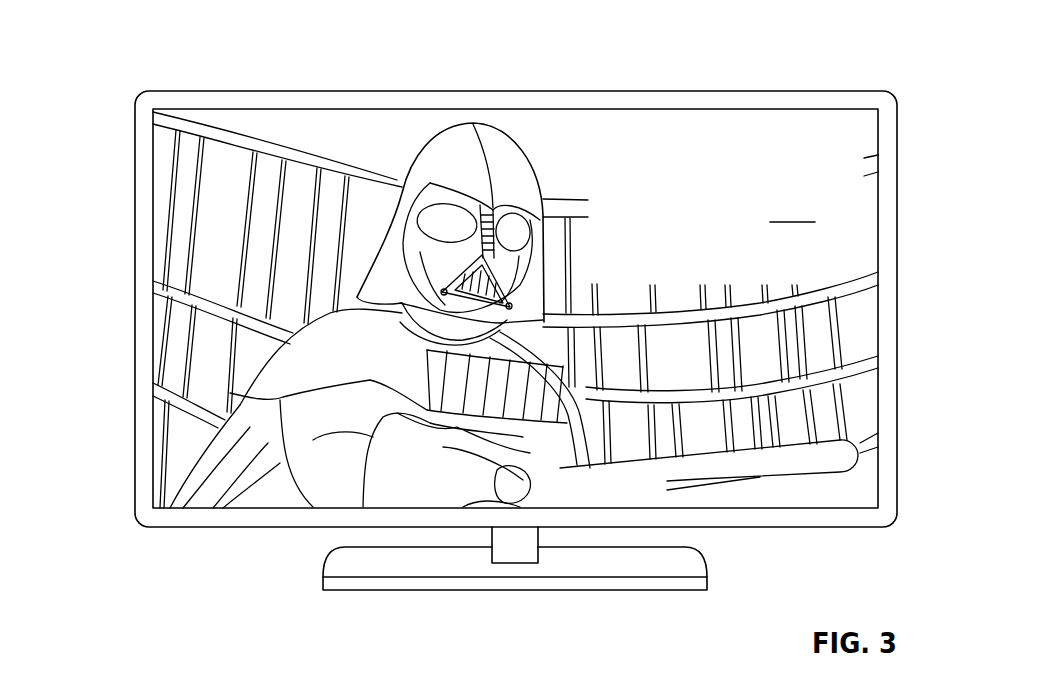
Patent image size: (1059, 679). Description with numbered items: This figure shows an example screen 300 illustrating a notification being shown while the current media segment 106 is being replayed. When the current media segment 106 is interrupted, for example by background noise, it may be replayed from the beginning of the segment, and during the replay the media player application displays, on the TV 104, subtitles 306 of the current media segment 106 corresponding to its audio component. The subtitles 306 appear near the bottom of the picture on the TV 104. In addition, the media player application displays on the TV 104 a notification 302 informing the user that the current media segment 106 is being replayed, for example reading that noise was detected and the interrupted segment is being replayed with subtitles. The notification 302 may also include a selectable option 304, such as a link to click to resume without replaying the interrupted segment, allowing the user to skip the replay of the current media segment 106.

The example screen 300 is at (156, 46).
The TV 104 is at (203, 92).
The current media segment 106 is at (181, 241).
The notification 302 is at (868, 152).
The selectable option 304 is at (840, 213).
The subtitles 306 is at (422, 497).